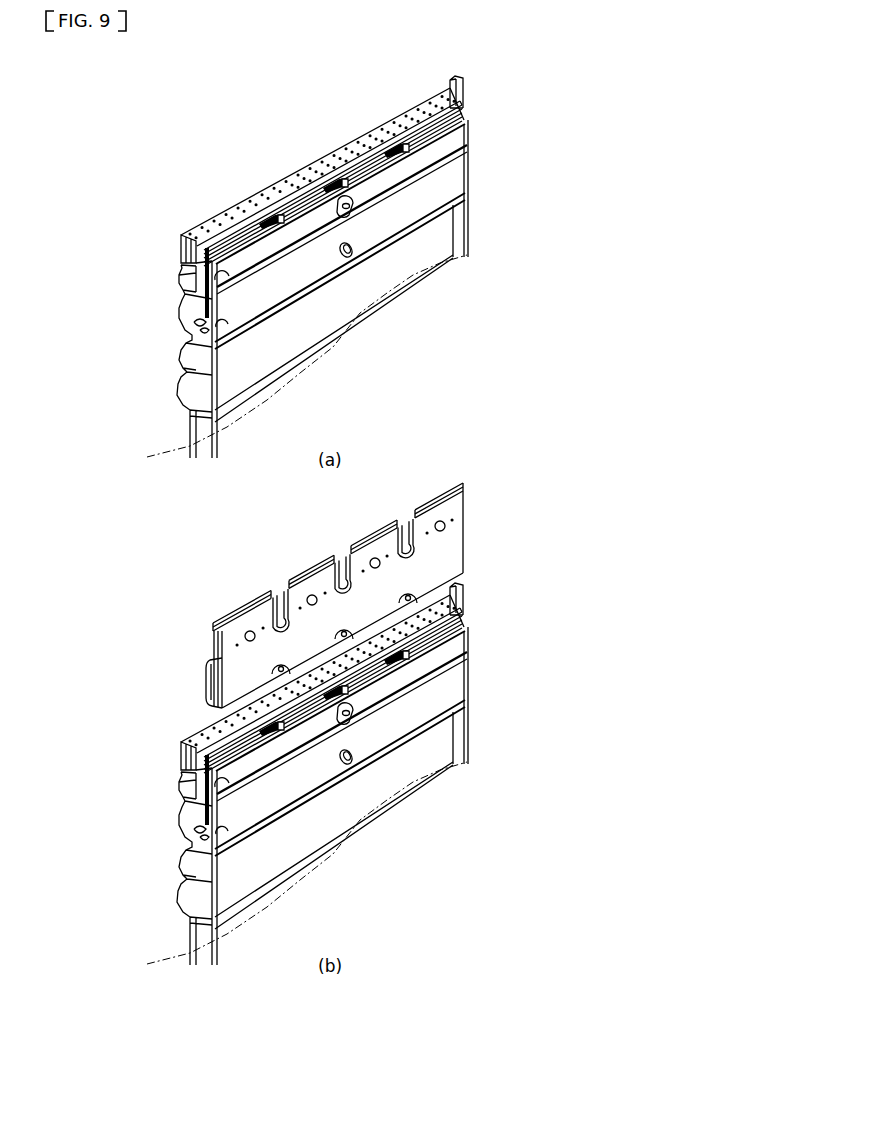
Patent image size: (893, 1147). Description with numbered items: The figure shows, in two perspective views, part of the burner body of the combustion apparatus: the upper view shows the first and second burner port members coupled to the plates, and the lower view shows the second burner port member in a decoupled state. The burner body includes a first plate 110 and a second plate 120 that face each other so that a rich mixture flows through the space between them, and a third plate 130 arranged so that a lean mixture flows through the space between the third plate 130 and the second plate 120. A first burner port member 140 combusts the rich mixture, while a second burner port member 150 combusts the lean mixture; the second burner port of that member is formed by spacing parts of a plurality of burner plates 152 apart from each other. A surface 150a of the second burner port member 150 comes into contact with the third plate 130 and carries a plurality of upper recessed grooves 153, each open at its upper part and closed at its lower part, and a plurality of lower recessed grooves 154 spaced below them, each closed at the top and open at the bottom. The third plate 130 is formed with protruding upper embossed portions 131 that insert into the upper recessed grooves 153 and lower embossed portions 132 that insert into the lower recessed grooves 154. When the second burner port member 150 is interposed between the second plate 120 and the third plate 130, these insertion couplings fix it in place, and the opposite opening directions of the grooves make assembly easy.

The first plate 110 is at (182, 298).
The second plate 120 is at (202, 277).
The third plate 130 is at (462, 170).
The upper embossed portion 131 is at (348, 160).
The lower embossed portion 132 is at (352, 247).
The first burner port member 140 is at (262, 198).
The second burner port member 150 is at (467, 107).
The surface 150a is at (448, 543).
The burner plate 152 is at (233, 680).
The upper recessed groove 153 is at (408, 523).
The lower recessed groove 154 is at (413, 590).